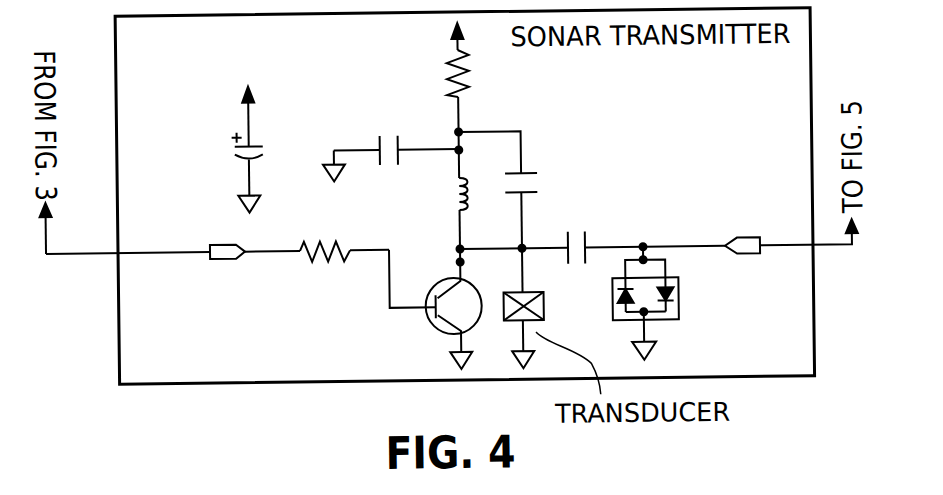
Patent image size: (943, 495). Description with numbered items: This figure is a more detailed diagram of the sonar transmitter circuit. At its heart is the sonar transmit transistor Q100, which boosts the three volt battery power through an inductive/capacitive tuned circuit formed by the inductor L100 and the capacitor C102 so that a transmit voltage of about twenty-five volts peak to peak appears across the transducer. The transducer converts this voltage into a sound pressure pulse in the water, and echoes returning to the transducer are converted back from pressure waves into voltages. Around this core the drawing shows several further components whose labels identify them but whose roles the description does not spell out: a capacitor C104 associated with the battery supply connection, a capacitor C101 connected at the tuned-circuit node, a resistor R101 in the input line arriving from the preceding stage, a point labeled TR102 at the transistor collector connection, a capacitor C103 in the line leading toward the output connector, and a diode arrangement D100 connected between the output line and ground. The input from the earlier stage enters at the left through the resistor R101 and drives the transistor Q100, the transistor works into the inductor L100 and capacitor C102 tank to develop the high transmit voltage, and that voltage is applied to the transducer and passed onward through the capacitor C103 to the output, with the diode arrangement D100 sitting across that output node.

The polarized decoupling capacitor on +BATT supply C104 is at (254, 144).
The capacitor to ground at tank node C101 is at (402, 136).
The capacitor of inductive/capacitive tuned circuit C102 is at (528, 174).
The output coupling capacitor to FIG. 5 C103 is at (585, 235).
The inductor of inductive/capacitive tuned circuit L100 is at (458, 194).
The base drive resistor from FIG. 3 input R101 is at (305, 258).
The test/tap point at transistor collector node TR102 is at (460, 262).
The sonar transmit transistor Q100 is at (428, 316).
The back-to-back diode clamp to ground D100 is at (678, 292).